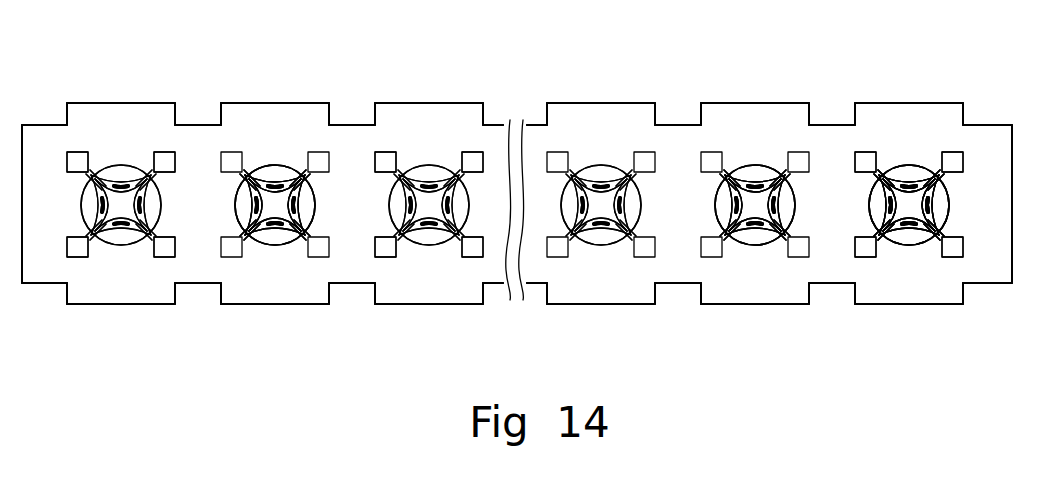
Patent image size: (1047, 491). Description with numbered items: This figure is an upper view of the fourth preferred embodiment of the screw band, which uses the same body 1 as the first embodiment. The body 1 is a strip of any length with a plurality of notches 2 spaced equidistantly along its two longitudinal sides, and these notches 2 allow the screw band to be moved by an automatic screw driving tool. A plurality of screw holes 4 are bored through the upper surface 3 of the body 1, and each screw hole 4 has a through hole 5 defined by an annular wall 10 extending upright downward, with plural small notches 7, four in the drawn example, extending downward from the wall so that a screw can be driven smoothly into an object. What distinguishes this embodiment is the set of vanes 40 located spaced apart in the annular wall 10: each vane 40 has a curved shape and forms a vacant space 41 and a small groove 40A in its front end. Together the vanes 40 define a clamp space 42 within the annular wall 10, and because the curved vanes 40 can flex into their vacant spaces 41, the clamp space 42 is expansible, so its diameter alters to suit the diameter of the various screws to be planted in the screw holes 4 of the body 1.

The body 1 is at (892, 102).
The notches 2 is at (197, 122).
The upper surface 3 is at (943, 124).
The screw hole 4 is at (952, 195).
The through hole 5 is at (897, 188).
The small notches 7 is at (83, 250).
The annular wall 10 is at (152, 203).
The vanes 40 is at (84, 175).
The small groove 40A is at (262, 221).
The vacant space 41 is at (130, 222).
The clamp space 42 is at (601, 213).